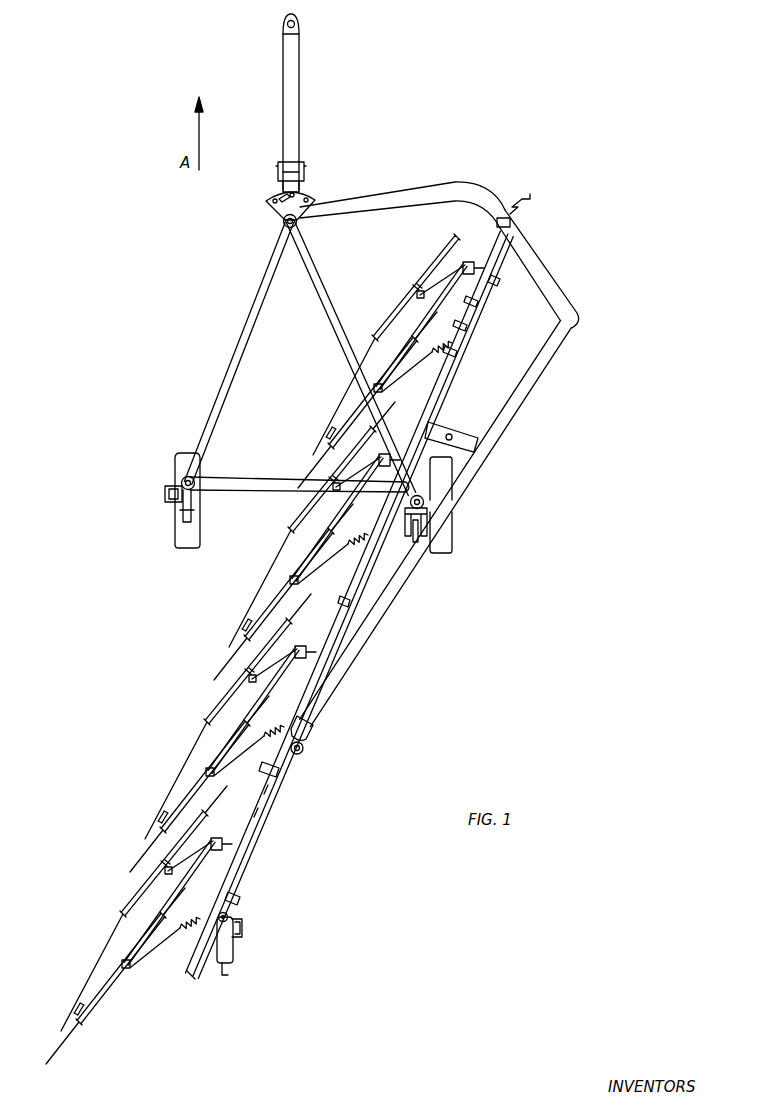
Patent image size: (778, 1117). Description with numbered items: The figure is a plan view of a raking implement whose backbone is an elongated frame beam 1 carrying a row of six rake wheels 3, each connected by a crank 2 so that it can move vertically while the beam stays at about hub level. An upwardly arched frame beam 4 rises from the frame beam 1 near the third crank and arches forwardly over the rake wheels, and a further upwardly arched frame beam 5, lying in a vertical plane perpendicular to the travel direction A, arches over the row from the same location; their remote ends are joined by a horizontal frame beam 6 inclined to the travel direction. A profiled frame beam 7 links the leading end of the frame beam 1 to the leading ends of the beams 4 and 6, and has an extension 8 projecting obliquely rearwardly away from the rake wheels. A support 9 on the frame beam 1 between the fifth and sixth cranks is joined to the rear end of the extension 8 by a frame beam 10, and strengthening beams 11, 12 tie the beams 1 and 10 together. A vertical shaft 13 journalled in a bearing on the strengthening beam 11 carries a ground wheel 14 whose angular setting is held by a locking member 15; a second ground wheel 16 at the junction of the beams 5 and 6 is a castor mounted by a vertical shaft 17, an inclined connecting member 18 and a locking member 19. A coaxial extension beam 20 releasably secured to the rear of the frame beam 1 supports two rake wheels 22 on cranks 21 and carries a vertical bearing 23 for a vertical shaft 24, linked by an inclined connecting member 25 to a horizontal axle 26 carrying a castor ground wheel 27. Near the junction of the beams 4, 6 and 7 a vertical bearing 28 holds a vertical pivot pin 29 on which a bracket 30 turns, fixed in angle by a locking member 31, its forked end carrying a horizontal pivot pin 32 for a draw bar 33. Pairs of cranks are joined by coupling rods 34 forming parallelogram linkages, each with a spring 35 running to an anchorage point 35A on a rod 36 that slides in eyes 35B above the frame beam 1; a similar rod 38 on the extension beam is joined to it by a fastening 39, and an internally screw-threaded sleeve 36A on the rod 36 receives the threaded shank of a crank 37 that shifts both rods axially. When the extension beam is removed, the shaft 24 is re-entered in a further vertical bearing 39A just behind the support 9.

The frame beam 1 is at (468, 350).
The crank 2 is at (437, 283).
The rake wheel 3 is at (405, 343).
The upwardly arched frame beam 4 is at (352, 371).
The upwardly arched frame beam 5 is at (284, 478).
The horizontal frame beam 6 is at (222, 377).
The profiled frame beam 7 is at (409, 197).
The extension 8 is at (542, 258).
The support 9 is at (318, 706).
The frame beam 10 is at (528, 396).
The strengthening beam 11 is at (425, 503).
The strengthening beam 12 is at (470, 440).
The vertical shaft 13 is at (441, 478).
The ground wheel 14 is at (453, 543).
The locking member 15 is at (405, 530).
The second ground wheel 16 is at (200, 540).
The vertical shaft 17 is at (182, 478).
The inclined connecting member 18 is at (165, 496).
The locking member 19 is at (183, 512).
The extension beam 20 is at (268, 802).
The crank 21 is at (206, 852).
The rake wheel 22 is at (112, 984).
The vertical bearing 23 is at (240, 900).
The vertical shaft 24 is at (230, 914).
The inclined connecting member 25 is at (243, 925).
The horizontal axle 26 is at (234, 945).
The ground wheel 27 is at (236, 974).
The vertical bearing 28 is at (283, 221).
The vertical pivot pin 29 is at (288, 226).
The bracket 30 is at (283, 186).
The locking member 31 is at (315, 197).
The horizontal pivot pin 32 is at (305, 167).
The draw bar 33 is at (298, 107).
The coupling rod 34 is at (450, 298).
The spring 35 is at (456, 354).
The anchorage point 35A is at (466, 328).
The eye 35B is at (478, 303).
The rod 36 is at (328, 608).
The internally screw-threaded sleeve 36A is at (497, 284).
The crank 37 is at (532, 197).
The rod 38 is at (255, 836).
The fastening 39 is at (280, 772).
The vertical bearing 39A is at (304, 746).